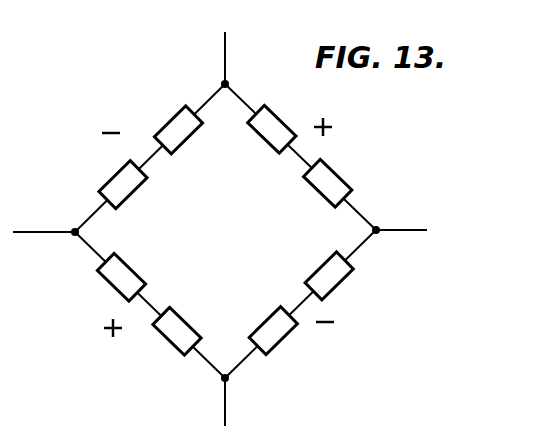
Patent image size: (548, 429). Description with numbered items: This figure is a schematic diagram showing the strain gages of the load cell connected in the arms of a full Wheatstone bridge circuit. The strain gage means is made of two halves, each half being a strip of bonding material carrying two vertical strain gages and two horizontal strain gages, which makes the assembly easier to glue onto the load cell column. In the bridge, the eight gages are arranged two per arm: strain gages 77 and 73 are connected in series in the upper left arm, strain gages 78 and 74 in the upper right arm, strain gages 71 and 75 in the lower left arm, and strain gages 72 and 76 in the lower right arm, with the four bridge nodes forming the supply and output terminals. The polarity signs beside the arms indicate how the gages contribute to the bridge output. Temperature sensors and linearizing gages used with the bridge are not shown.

The strain gage 71 is at (108, 278).
The strain gage 72 is at (340, 282).
The strain gage 73 is at (100, 186).
The strain gage 74 is at (334, 176).
The strain gage 75 is at (166, 340).
The strain gage 76 is at (286, 346).
The strain gage 77 is at (169, 117).
The strain gage 78 is at (276, 118).